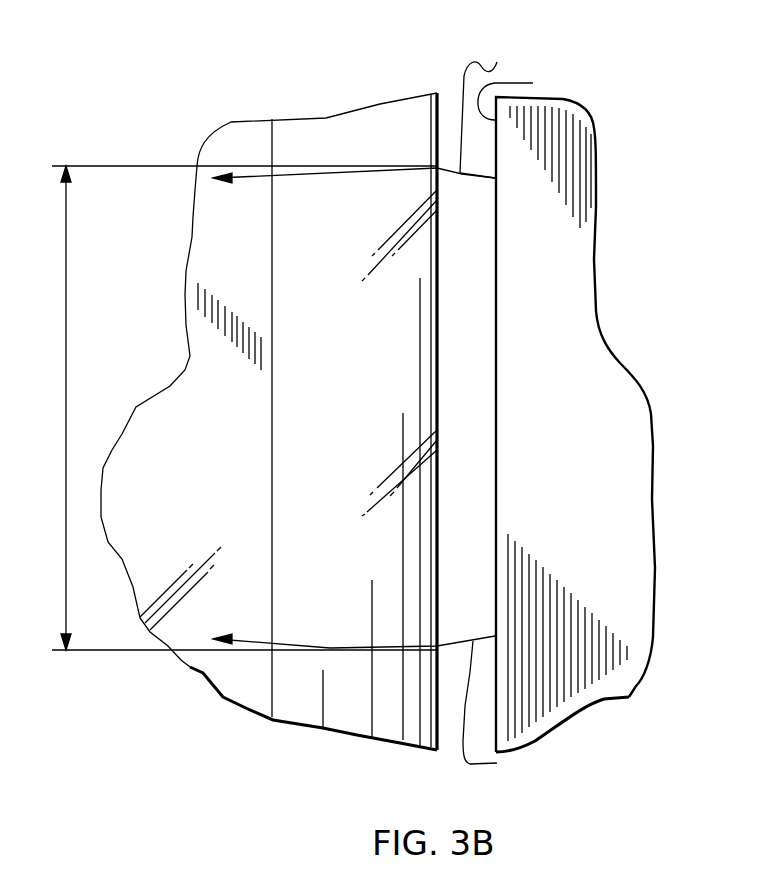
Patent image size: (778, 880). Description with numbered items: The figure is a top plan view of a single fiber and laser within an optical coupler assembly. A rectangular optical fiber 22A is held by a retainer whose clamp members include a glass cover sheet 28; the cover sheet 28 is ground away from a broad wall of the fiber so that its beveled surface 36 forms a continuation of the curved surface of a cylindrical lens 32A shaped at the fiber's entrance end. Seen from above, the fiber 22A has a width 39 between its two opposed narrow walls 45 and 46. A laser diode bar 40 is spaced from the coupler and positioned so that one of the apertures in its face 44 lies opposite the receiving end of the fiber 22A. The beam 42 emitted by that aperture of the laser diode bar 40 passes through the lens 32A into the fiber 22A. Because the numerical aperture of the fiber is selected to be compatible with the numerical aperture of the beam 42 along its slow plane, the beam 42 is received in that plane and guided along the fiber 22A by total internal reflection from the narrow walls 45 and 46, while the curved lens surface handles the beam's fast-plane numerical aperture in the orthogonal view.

The rectangular optical fiber 22A is at (289, 152).
The glass cover sheet 28 is at (172, 431).
The cylindrical lens 32A is at (440, 372).
The beveled surface 36 is at (347, 710).
The width 39 is at (67, 408).
The laser diode bar 40 is at (579, 291).
The laser beam 42 is at (497, 62).
The face 44 is at (533, 83).
The narrow wall 45 is at (228, 166).
The narrow wall 46 is at (203, 655).